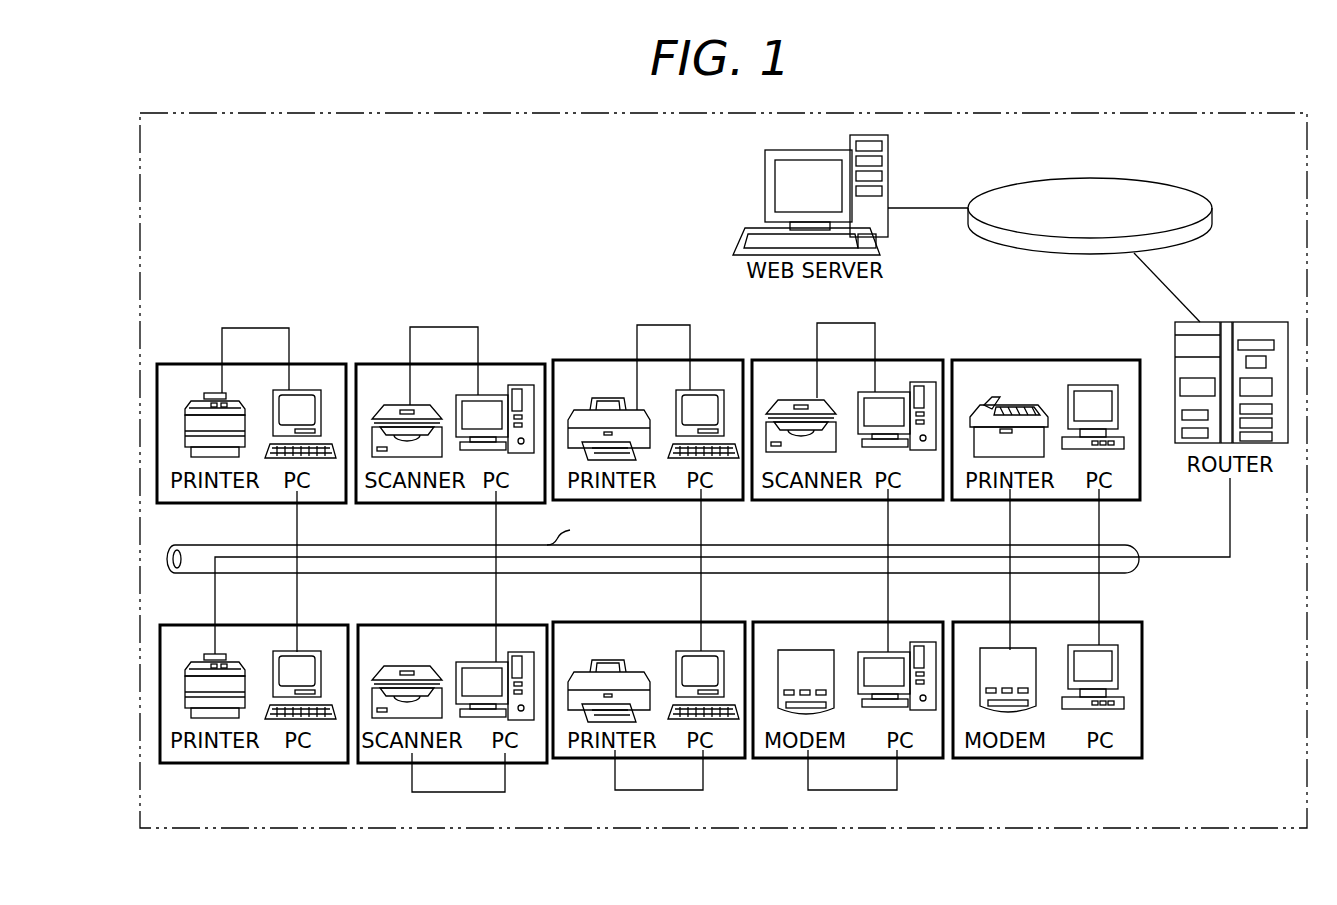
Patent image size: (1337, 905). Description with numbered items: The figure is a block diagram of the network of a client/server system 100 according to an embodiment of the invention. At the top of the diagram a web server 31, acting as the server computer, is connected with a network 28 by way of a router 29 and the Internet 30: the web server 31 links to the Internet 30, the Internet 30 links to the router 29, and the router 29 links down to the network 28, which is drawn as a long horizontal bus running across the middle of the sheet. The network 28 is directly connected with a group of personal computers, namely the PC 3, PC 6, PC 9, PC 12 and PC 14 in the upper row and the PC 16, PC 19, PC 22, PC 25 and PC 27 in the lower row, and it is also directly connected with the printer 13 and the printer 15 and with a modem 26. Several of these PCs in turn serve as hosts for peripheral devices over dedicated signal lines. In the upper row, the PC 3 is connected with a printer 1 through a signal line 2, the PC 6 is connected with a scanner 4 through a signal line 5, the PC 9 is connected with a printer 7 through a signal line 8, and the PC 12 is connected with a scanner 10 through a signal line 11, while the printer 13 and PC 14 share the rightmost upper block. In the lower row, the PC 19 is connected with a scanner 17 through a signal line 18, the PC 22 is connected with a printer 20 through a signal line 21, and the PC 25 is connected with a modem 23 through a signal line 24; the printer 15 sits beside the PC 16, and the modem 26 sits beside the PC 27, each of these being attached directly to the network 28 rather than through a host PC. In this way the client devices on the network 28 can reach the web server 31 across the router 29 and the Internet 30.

The client/server system 100 is at (1239, 110).
The printer 1 is at (204, 393).
The signal line 2 is at (260, 328).
The personal computer 3 is at (310, 390).
The scanner 4 is at (381, 405).
The signal line 5 is at (452, 327).
The personal computer 6 is at (484, 395).
The printer 7 is at (598, 400).
The signal line 8 is at (665, 325).
The personal computer 9 is at (705, 390).
The scanner 10 is at (785, 400).
The signal line 11 is at (855, 323).
The personal computer 12 is at (892, 395).
The printer 13 is at (985, 397).
The personal computer 14 is at (1095, 385).
The printer 15 is at (203, 654).
The personal computer 16 is at (308, 651).
The scanner 17 is at (379, 666).
The signal line 18 is at (496, 792).
The personal computer 19 is at (462, 662).
The printer 20 is at (600, 660).
The signal line 21 is at (668, 790).
The personal computer 22 is at (710, 651).
The modem 23 is at (801, 650).
The signal line 24 is at (865, 790).
The personal computer 25 is at (899, 653).
The modem 26 is at (988, 648).
The personal computer 27 is at (1074, 645).
The network 28 is at (1125, 546).
The router 29 is at (1245, 322).
The Internet 30 is at (1149, 179).
The web server 31 is at (888, 170).